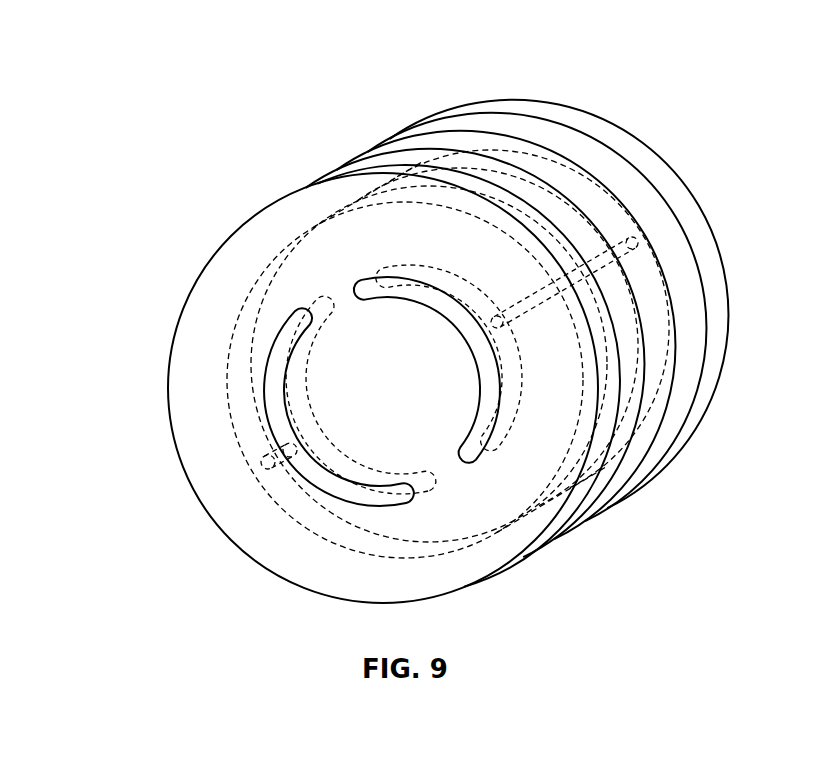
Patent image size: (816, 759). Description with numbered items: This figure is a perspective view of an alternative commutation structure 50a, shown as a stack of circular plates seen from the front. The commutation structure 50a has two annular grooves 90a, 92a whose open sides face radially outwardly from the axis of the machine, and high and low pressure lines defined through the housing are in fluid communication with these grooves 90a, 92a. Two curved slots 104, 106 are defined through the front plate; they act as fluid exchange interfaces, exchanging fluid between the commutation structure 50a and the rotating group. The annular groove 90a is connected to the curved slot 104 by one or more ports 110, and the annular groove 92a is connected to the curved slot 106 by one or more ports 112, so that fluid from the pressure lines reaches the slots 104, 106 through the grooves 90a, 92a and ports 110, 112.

The commutation structure 50a is at (176, 92).
The annular groove 90a is at (582, 190).
The annular groove 92a is at (242, 353).
The curved slot 104 is at (512, 425).
The curved slot 106 is at (320, 303).
The port 110 is at (533, 310).
The port 112 is at (272, 470).